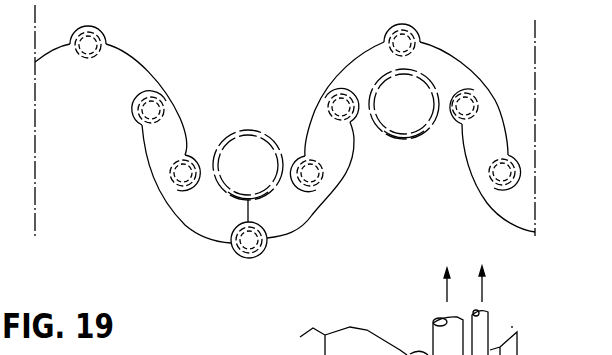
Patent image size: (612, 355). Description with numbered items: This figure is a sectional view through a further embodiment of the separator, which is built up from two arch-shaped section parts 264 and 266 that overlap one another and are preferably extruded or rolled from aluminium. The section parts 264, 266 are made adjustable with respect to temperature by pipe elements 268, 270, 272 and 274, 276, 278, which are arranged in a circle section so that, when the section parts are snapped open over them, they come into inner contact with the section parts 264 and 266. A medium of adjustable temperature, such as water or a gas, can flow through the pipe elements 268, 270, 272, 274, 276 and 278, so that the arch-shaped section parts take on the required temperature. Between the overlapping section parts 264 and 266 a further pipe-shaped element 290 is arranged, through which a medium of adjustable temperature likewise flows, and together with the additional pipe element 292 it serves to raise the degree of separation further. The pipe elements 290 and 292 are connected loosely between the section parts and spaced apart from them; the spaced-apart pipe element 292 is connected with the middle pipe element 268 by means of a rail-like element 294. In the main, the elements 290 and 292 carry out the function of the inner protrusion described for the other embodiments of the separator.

The arch-shaped section part 264 is at (295, 233).
The arch-shaped section part 266 is at (474, 65).
The pipe element 268 is at (495, 183).
The pipe element 270 is at (417, 32).
The pipe element 272 is at (303, 155).
The pipe element 274 is at (141, 124).
The pipe element 276 is at (350, 123).
The pipe element 278 is at (232, 258).
The pipe-shaped element 290 is at (416, 137).
The pipe element 292 is at (242, 131).
The rail-like element 294 is at (248, 208).